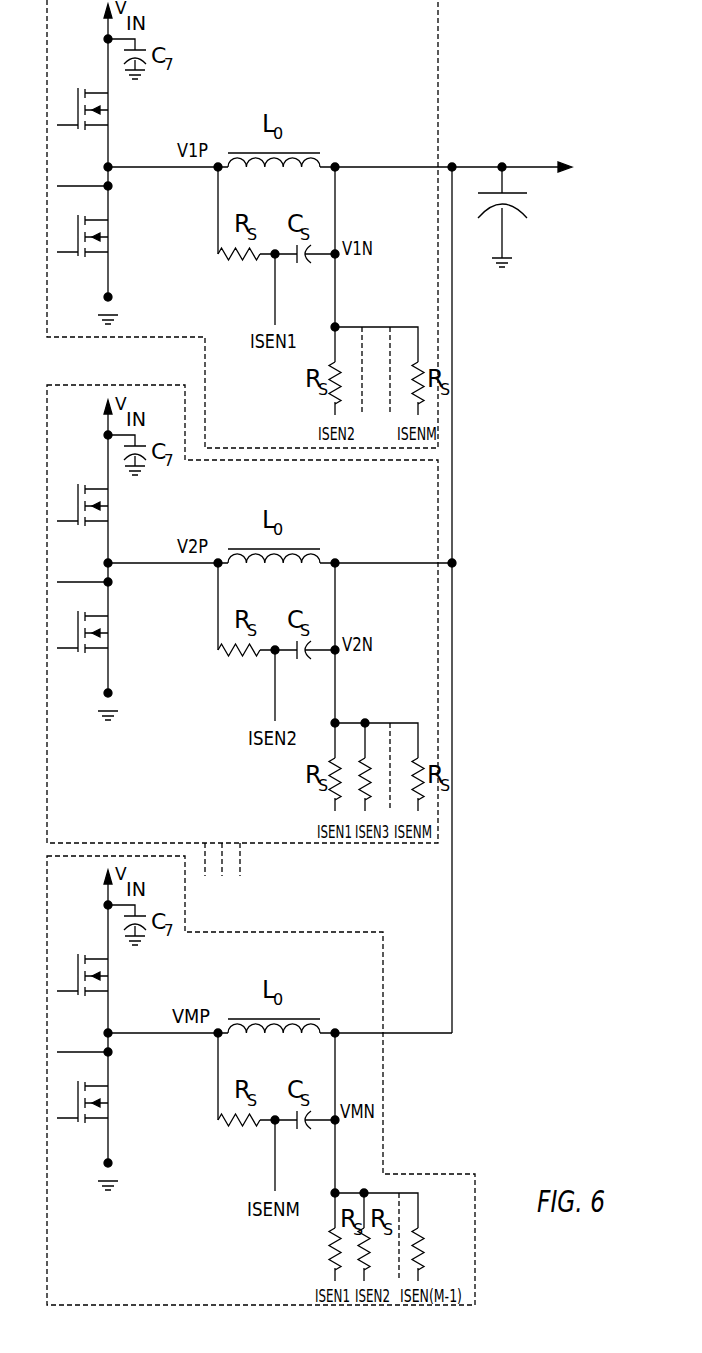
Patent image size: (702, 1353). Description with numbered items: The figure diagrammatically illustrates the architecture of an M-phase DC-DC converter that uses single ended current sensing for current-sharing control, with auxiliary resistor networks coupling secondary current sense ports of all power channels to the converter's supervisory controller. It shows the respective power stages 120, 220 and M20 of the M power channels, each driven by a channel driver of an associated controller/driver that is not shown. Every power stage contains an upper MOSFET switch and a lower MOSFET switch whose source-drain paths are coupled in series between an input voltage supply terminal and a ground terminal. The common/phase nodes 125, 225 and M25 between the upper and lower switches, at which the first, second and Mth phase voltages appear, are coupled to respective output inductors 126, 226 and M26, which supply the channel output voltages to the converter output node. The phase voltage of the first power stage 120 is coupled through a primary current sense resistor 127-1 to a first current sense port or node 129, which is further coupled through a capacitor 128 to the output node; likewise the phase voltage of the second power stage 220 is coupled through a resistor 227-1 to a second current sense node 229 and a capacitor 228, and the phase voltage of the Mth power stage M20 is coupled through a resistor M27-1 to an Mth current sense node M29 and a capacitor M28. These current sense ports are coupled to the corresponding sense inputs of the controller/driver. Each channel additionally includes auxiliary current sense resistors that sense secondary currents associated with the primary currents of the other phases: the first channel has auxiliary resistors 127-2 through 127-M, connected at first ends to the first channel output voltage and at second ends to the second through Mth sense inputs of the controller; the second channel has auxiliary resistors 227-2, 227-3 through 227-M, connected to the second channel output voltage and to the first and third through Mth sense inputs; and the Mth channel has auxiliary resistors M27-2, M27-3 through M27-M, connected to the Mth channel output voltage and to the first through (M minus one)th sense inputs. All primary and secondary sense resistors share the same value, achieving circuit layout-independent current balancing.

The first power stage 120 is at (438, 73).
The common/phase node 125 is at (110, 165).
The output inductor 126 is at (317, 153).
The primary current sense resistor 127-1 is at (237, 260).
The auxiliary current sense resistor 127-2 is at (337, 362).
The auxiliary current sense resistor 127-M is at (418, 362).
The capacitor 128 is at (299, 264).
The ISEN1 port or node 129 is at (275, 250).
The second power stage 220 is at (438, 522).
The common/phase node 225 is at (103, 564).
The output inductor 226 is at (292, 538).
The primary current sense resistor 227-1 is at (230, 681).
The auxiliary current sense resistor 227-2 is at (330, 793).
The auxiliary current sense resistor 227-3 is at (367, 758).
The auxiliary current sense resistor 227-M is at (418, 758).
The capacitor 228 is at (297, 677).
The ISEN2 port or node 229 is at (270, 657).
The Mth power stage M20 is at (475, 1196).
The common/phase node M25 is at (109, 1034).
The output inductor M26 is at (297, 1003).
The primary current sense resistor M27-1 is at (230, 1149).
The auxiliary current sense resistor M27-2 is at (330, 1262).
The auxiliary current sense resistor M27-3 is at (364, 1228).
The auxiliary current sense resistor M27-M is at (418, 1228).
The capacitor M28 is at (297, 1147).
The ISENM port or node M29 is at (269, 1124).